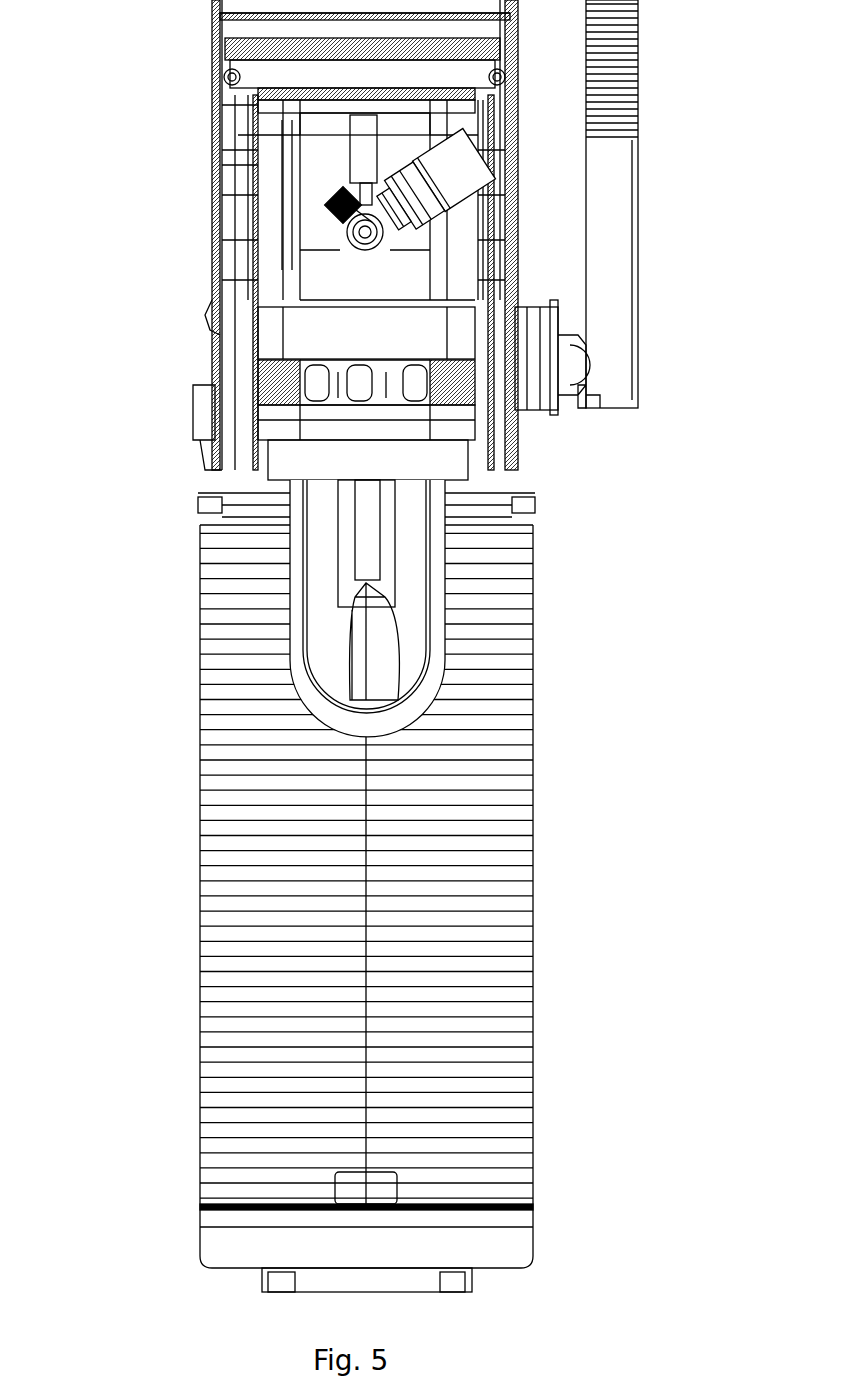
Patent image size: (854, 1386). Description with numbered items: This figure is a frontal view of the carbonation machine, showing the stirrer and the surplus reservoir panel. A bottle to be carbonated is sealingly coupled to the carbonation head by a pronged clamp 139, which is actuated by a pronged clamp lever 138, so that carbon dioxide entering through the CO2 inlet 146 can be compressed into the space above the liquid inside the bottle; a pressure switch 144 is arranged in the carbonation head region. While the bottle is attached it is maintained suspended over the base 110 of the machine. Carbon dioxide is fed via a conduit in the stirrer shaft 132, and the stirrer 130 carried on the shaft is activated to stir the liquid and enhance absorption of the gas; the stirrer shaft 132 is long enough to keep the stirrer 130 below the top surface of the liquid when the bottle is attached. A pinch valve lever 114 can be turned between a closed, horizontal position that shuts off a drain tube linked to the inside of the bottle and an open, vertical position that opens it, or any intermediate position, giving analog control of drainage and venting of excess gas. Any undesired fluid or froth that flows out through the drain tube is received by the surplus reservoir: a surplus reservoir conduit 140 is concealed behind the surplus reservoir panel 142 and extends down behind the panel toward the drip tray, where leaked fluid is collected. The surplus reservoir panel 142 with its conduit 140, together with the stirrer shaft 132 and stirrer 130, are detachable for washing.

The base 110 is at (540, 1248).
The pinch valve lever 114 is at (640, 208).
The stirrer 130 is at (403, 650).
The stirrer shaft 132 is at (383, 535).
The pronged clamp lever 138 is at (310, 690).
The pronged clamp 139 is at (290, 388).
The surplus reservoir conduit 140 is at (347, 561).
The surplus reservoir panel 142 is at (215, 943).
The pressure switch 144 is at (478, 150).
The CO2 inlet 146 is at (330, 185).